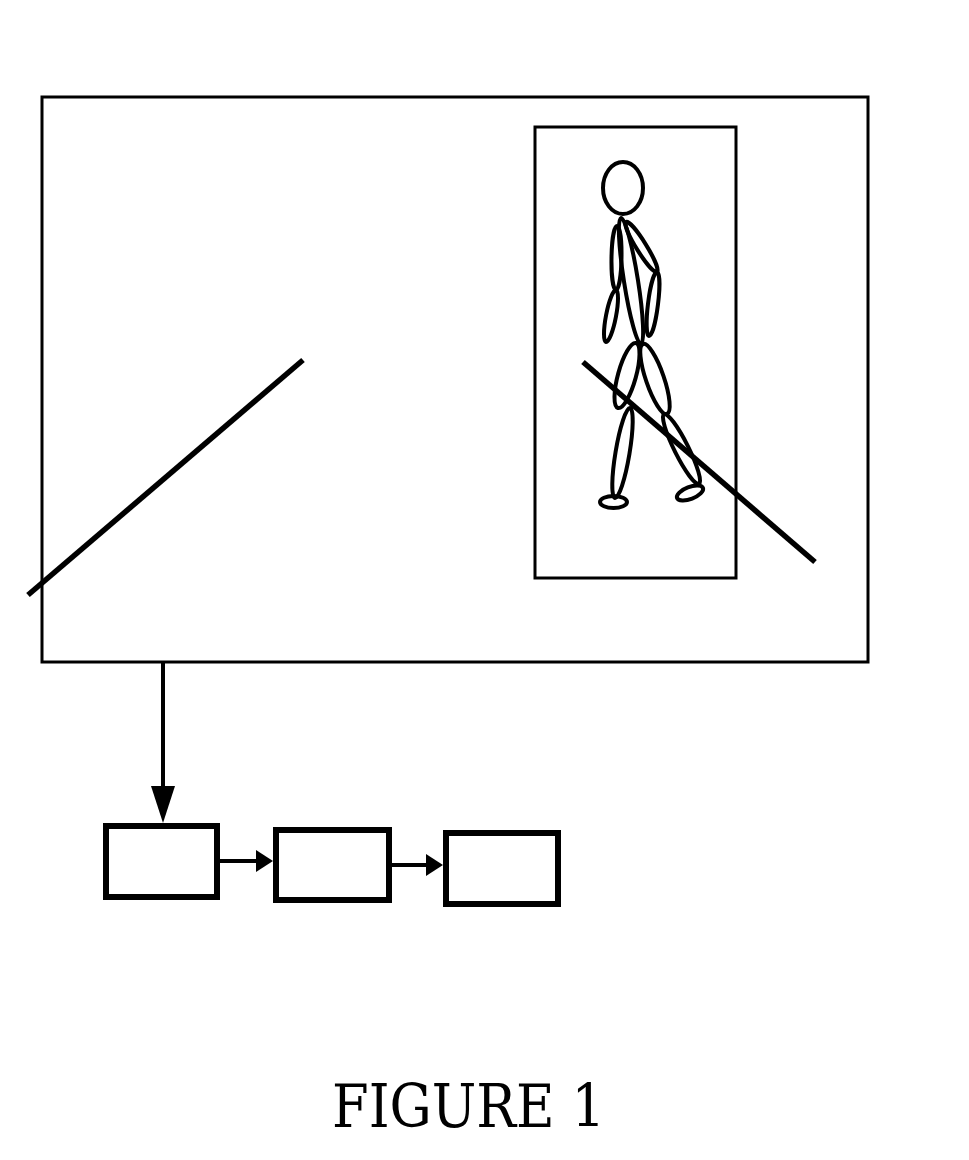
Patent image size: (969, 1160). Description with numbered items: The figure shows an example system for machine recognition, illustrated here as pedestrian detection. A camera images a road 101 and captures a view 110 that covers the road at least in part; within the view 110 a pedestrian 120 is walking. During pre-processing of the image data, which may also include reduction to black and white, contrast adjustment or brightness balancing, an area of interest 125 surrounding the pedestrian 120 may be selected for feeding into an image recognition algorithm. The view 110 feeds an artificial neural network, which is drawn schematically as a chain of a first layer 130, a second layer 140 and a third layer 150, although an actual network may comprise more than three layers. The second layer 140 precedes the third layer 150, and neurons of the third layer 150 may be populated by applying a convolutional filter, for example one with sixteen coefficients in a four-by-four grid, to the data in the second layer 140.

The road 101 is at (181, 457).
The view 110 is at (426, 663).
The pedestrian 120 is at (655, 254).
The area of interest 125 is at (665, 127).
The first layer 130 is at (161, 861).
The second layer 140 is at (332, 865).
The third layer 150 is at (502, 868).